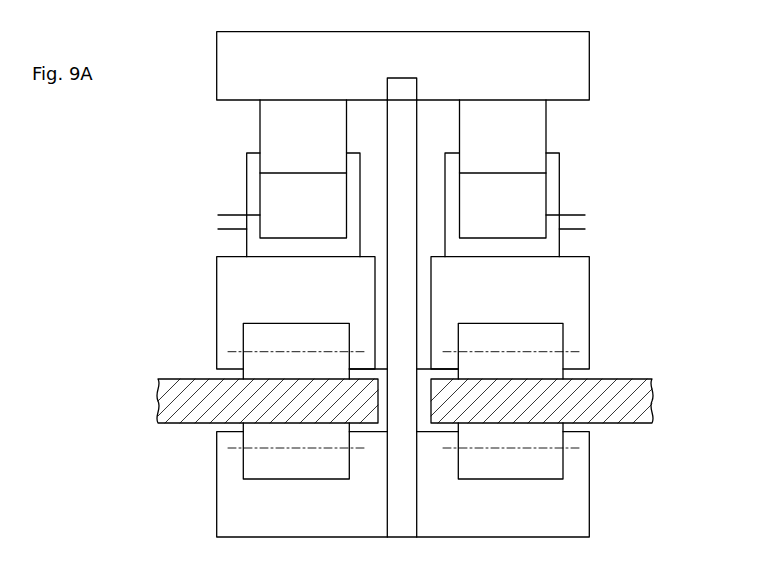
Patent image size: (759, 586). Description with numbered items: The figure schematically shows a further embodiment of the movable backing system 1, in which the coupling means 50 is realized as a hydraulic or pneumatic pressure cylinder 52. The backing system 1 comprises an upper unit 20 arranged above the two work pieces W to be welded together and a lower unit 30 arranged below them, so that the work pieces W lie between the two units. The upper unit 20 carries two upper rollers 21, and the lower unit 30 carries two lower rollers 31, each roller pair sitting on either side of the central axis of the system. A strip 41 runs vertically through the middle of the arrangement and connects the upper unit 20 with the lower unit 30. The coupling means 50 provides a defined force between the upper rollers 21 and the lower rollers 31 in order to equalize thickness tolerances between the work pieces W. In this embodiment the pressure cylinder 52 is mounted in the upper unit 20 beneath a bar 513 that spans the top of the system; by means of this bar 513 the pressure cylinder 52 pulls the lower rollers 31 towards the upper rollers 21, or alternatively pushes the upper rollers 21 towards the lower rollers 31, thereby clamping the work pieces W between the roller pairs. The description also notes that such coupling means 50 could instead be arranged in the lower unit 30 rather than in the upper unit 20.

The bar 513 is at (533, 67).
The strip 41 is at (397, 300).
The pressure cylinder 52 is at (283, 133).
The coupling means 50 is at (283, 190).
The upper unit 20 is at (250, 300).
The upper rollers 21 is at (265, 338).
The work pieces W is at (177, 402).
The lower rollers 31 is at (258, 438).
The lower unit 30 is at (252, 495).
The movable backing system 1 is at (628, 146).